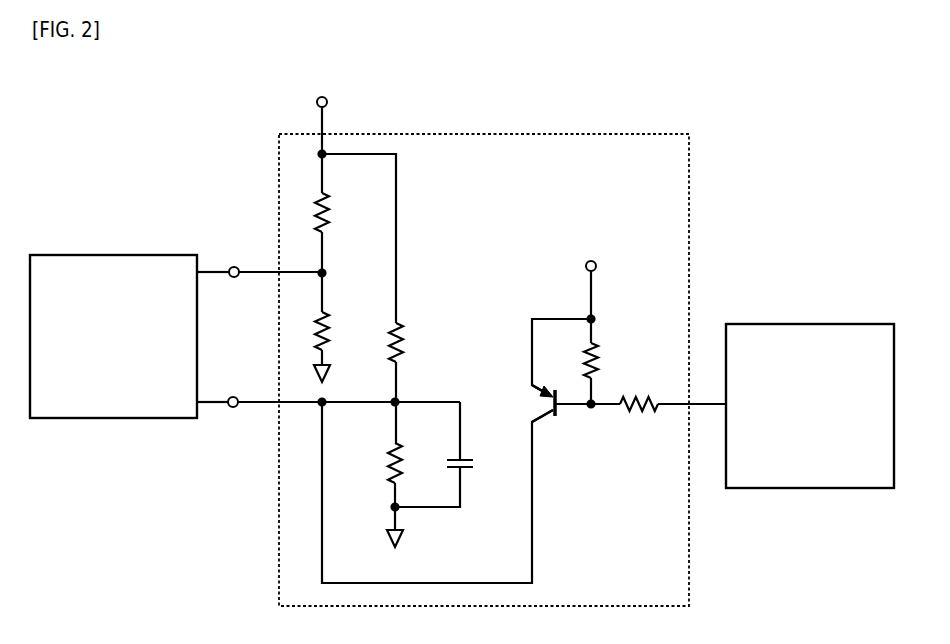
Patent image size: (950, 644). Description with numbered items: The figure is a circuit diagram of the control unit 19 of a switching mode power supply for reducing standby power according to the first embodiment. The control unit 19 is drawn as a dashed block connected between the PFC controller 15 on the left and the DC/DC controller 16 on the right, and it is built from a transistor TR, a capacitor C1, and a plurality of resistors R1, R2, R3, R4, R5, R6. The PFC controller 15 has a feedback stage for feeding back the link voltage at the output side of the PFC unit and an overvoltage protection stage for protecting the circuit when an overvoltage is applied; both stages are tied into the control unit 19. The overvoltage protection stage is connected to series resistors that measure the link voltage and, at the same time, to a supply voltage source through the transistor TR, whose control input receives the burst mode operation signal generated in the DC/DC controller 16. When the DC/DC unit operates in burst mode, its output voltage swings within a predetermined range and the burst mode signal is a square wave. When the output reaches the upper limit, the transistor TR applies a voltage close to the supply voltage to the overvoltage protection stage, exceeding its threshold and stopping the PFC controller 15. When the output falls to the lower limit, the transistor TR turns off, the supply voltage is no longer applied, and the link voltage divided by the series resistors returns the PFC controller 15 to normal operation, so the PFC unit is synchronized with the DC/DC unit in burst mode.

The PFC controller 15 is at (113, 255).
The DC/DC controller 16 is at (809, 324).
The control unit 19 is at (496, 134).
The resistor R1 is at (340, 212).
The resistor R2 is at (340, 331).
The resistor R3 is at (414, 344).
The resistor R4 is at (376, 463).
The resistor R5 is at (609, 360).
The resistor R6 is at (639, 423).
The capacitor C1 is at (477, 467).
The transistor TR is at (555, 417).